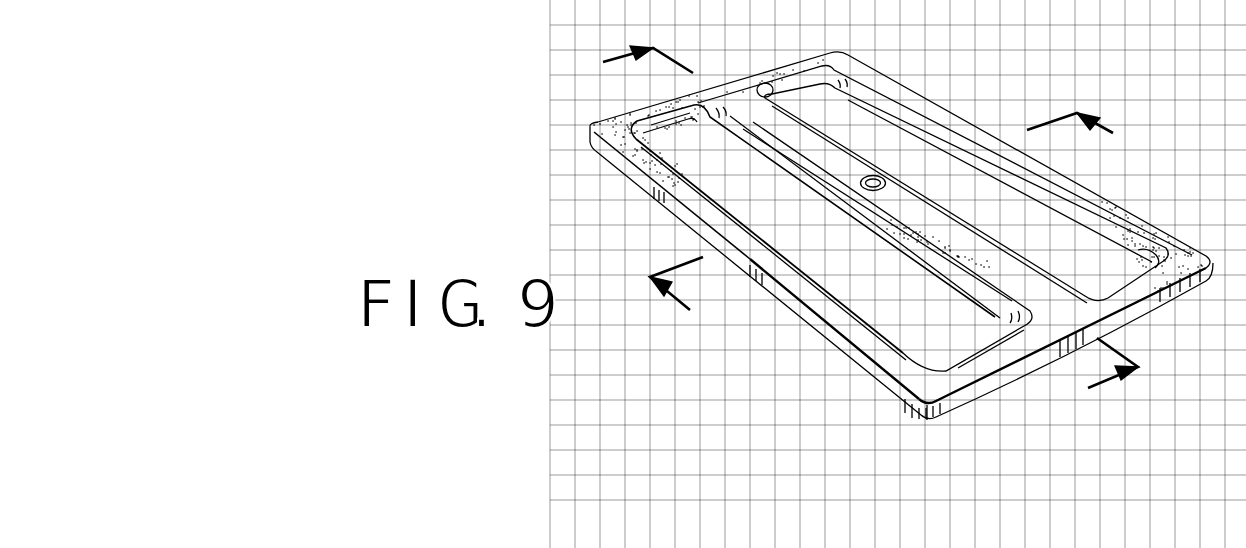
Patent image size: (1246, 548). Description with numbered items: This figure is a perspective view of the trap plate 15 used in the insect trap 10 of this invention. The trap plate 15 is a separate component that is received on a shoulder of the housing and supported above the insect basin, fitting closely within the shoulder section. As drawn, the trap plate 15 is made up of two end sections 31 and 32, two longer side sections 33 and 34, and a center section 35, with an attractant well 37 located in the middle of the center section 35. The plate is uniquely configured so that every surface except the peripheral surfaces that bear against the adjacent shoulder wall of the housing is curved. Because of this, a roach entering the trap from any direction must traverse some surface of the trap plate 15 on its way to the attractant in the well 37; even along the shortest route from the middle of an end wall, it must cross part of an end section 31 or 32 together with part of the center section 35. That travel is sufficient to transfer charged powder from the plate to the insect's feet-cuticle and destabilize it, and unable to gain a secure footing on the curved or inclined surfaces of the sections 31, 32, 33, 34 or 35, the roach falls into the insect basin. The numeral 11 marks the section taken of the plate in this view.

The insect trap 10 is at (865, 194).
The section line 11- 11 is at (897, 202).
The trap plate 15 is at (1137, 222).
The end section 31 is at (807, 57).
The end section 32 is at (990, 365).
The side section 33 is at (963, 127).
The side section 34 is at (823, 310).
The center section 35 is at (977, 257).
The attractant well 37 is at (877, 178).